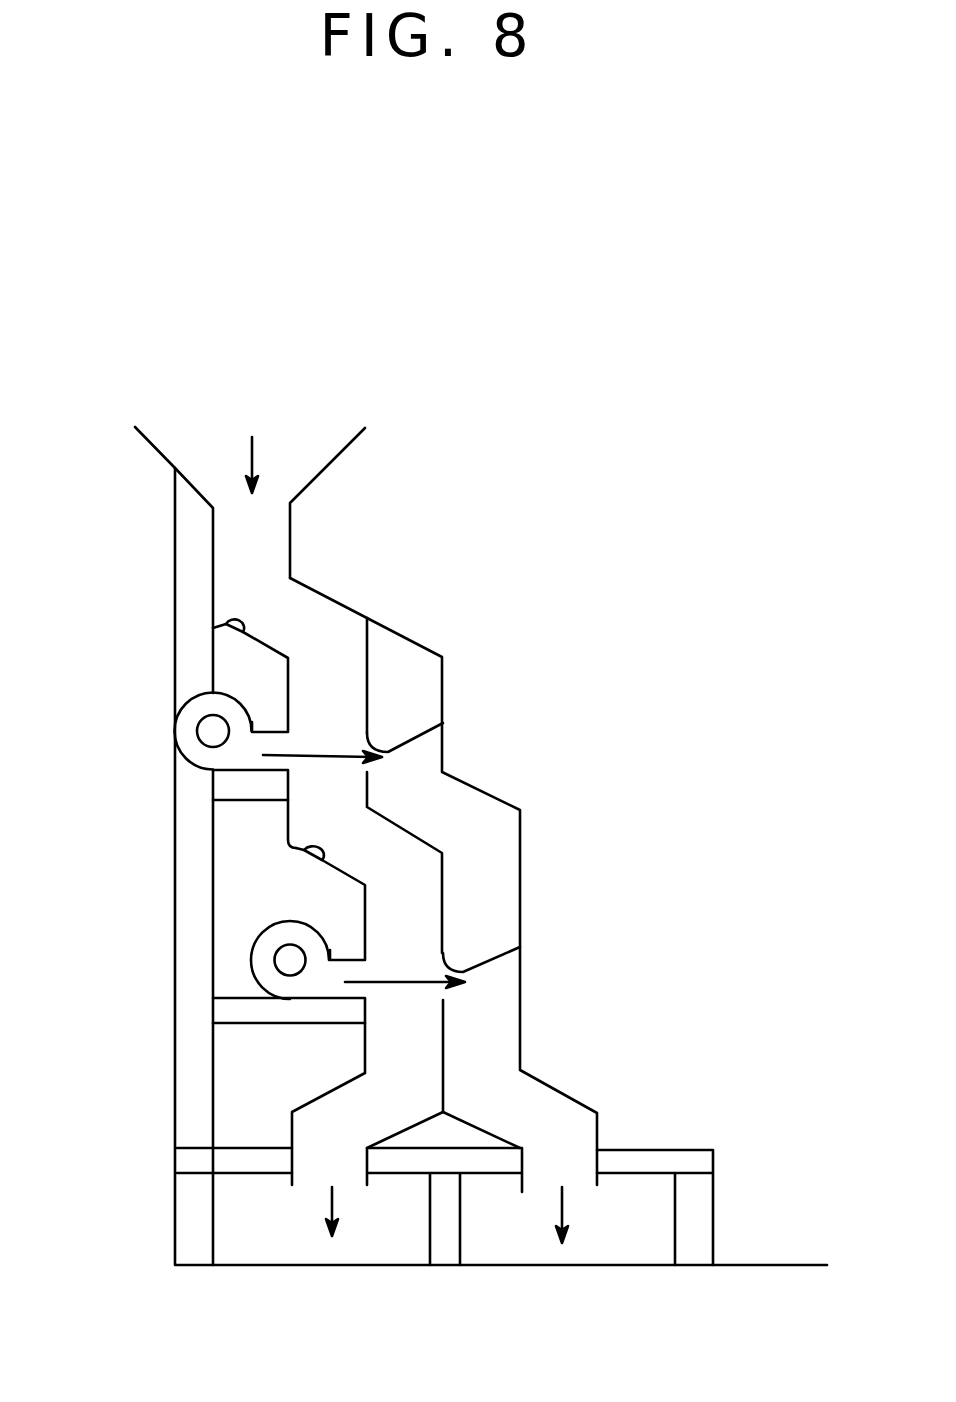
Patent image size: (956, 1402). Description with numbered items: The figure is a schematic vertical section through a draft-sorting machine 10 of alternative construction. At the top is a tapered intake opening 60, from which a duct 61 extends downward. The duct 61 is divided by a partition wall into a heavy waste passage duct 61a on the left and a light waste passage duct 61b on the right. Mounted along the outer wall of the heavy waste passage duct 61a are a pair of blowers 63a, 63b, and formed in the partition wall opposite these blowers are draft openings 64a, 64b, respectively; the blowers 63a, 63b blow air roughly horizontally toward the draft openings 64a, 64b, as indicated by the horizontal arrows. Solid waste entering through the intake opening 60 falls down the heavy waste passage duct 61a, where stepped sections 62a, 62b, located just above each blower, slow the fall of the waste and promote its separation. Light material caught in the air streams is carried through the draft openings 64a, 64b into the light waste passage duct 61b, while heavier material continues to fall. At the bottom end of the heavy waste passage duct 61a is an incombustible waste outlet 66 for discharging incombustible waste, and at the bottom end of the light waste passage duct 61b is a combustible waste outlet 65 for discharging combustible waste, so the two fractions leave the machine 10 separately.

The draft-sorting machine 10 is at (438, 468).
The tapered intake opening 60 is at (345, 447).
The duct 61 is at (289, 533).
The heavy waste passage duct 61a is at (330, 662).
The light waste passage duct 61b is at (418, 693).
The stepped section 62a is at (223, 626).
The stepped section 62b is at (297, 852).
The blower 63a is at (183, 733).
The blower 63b is at (251, 955).
The draft opening 64a is at (443, 723).
The draft opening 64b is at (520, 947).
The combustible waste outlet 65 is at (597, 1160).
The incombustible waste outlet 66 is at (292, 1165).